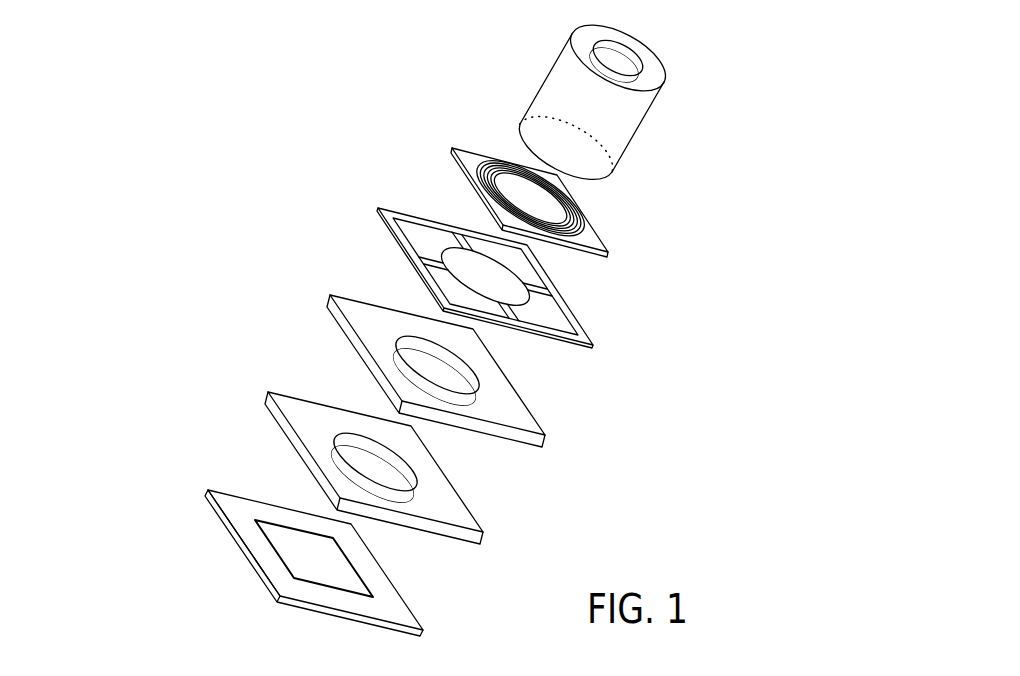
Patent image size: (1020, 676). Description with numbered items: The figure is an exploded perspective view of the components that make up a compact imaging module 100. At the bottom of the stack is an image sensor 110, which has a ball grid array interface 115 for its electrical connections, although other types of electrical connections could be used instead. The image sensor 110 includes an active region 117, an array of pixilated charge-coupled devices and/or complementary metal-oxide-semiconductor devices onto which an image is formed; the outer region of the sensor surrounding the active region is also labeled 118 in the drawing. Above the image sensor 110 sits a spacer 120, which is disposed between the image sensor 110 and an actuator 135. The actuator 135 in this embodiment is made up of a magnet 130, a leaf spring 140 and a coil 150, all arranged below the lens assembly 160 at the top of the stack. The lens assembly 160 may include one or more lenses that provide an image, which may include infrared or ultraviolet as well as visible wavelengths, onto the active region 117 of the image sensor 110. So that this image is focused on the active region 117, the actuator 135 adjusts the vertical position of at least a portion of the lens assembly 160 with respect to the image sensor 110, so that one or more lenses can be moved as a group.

The imaging module 100 is at (95, 34).
The image sensor 110 is at (208, 490).
The ball grid array interface 115 is at (233, 530).
The active region 117 is at (283, 563).
The peripheral bonding region 118 is at (382, 603).
The spacer 120 is at (453, 480).
The magnet 130 is at (527, 413).
The actuator 135 is at (495, 117).
The leaf spring 140 is at (567, 317).
The coil 150 is at (607, 233).
The lens assembly 160 is at (647, 120).